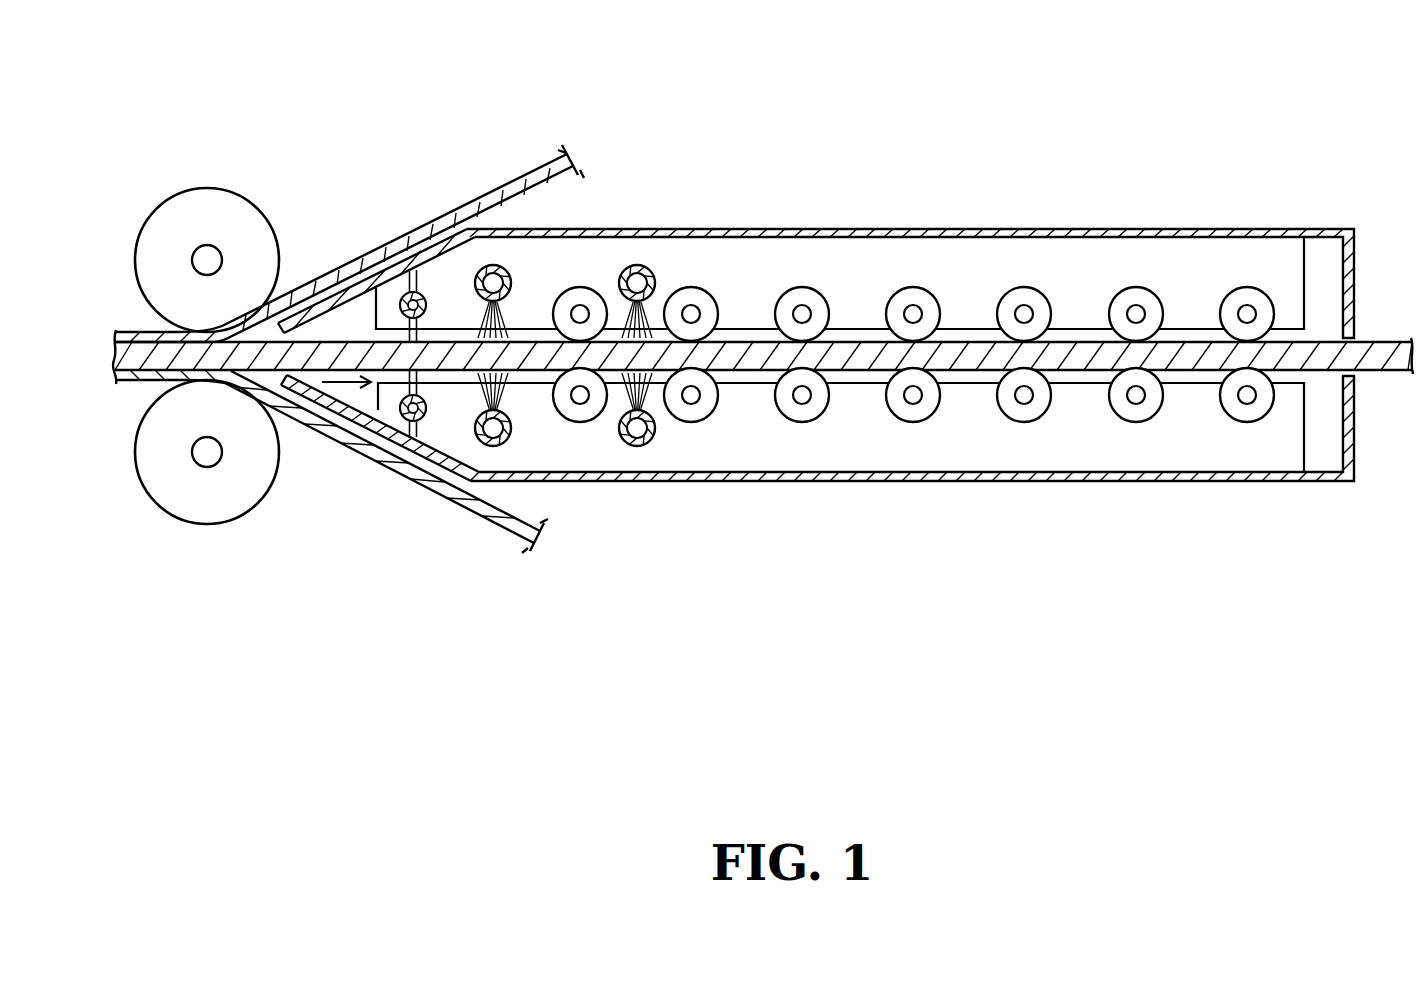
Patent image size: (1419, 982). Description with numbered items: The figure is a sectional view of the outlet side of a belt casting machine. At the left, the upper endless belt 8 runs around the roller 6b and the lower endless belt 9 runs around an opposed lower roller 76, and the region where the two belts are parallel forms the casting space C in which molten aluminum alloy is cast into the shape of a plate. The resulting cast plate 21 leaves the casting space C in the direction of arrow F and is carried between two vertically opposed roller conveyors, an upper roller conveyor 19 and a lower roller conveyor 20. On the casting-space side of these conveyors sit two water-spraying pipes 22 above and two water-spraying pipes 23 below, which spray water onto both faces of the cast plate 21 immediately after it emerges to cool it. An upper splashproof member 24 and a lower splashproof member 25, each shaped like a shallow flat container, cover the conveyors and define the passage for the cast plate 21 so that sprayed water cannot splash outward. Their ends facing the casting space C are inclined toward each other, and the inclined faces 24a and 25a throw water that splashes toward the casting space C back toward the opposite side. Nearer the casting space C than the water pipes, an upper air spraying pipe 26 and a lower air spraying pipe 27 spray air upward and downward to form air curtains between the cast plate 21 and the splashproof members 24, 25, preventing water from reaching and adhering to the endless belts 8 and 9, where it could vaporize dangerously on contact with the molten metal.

The roller 6b is at (237, 197).
The lower nip roller 76 is at (213, 525).
The casting space C is at (131, 362).
The arrow F is at (343, 387).
The upper endless belt 8 is at (538, 163).
The lower endless belt 9 is at (514, 530).
The upper splashproof member 24 is at (948, 228).
The inclined face of upper splashproof member 24a is at (353, 286).
The lower splashproof member 25 is at (985, 483).
The inclined face of lower splashproof member 25a is at (437, 487).
The upper roller conveyor 19 is at (1016, 263).
The lower roller conveyor 20 is at (1068, 456).
The cast plate 21 is at (755, 338).
The water-spraying pipes 22 is at (506, 270).
The water-spraying pipes 23 is at (506, 441).
The air spraying pipe 26 is at (422, 296).
The air spraying pipe 27 is at (404, 417).